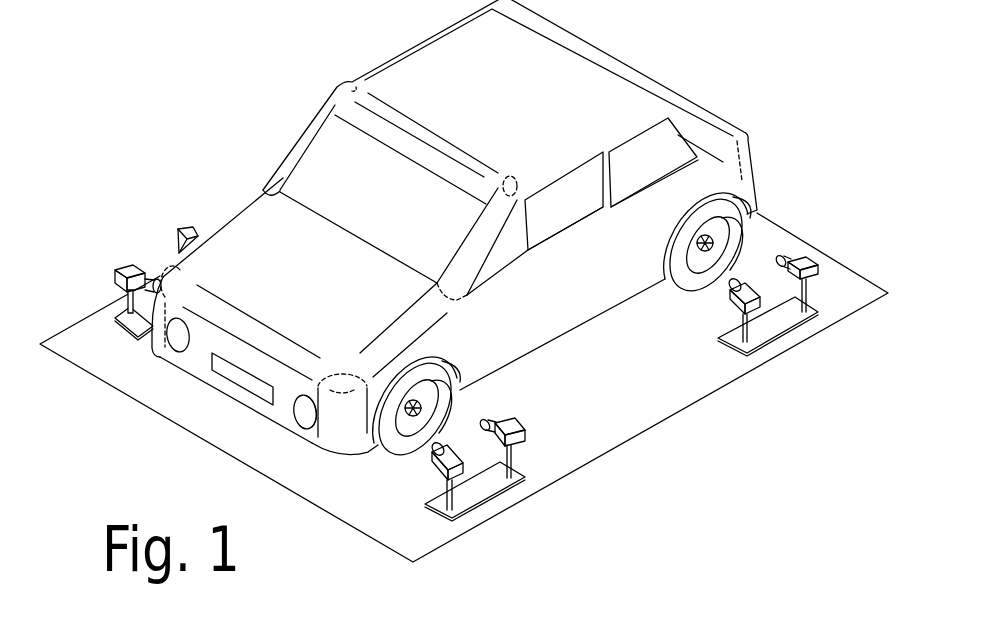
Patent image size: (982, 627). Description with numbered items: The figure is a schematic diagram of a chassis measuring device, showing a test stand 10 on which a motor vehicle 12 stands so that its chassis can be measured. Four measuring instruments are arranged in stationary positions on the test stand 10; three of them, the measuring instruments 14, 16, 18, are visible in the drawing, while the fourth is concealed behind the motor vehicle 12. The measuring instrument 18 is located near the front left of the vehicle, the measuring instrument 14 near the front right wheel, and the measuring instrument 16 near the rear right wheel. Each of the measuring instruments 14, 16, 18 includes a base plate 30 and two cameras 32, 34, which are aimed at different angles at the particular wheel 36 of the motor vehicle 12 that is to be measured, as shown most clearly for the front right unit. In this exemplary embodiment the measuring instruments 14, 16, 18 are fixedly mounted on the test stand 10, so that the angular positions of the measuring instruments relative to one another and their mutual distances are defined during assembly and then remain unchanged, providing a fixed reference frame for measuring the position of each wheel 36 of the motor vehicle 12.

The test stand 10 is at (674, 434).
The motor vehicle 12 is at (474, 233).
The measuring instrument 14 is at (483, 472).
The measuring instrument 16 is at (781, 334).
The measuring instrument 18 is at (125, 334).
The base plate 30 is at (474, 498).
The camera 32 is at (433, 462).
The camera 34 is at (522, 422).
The wheel 36 is at (443, 413).